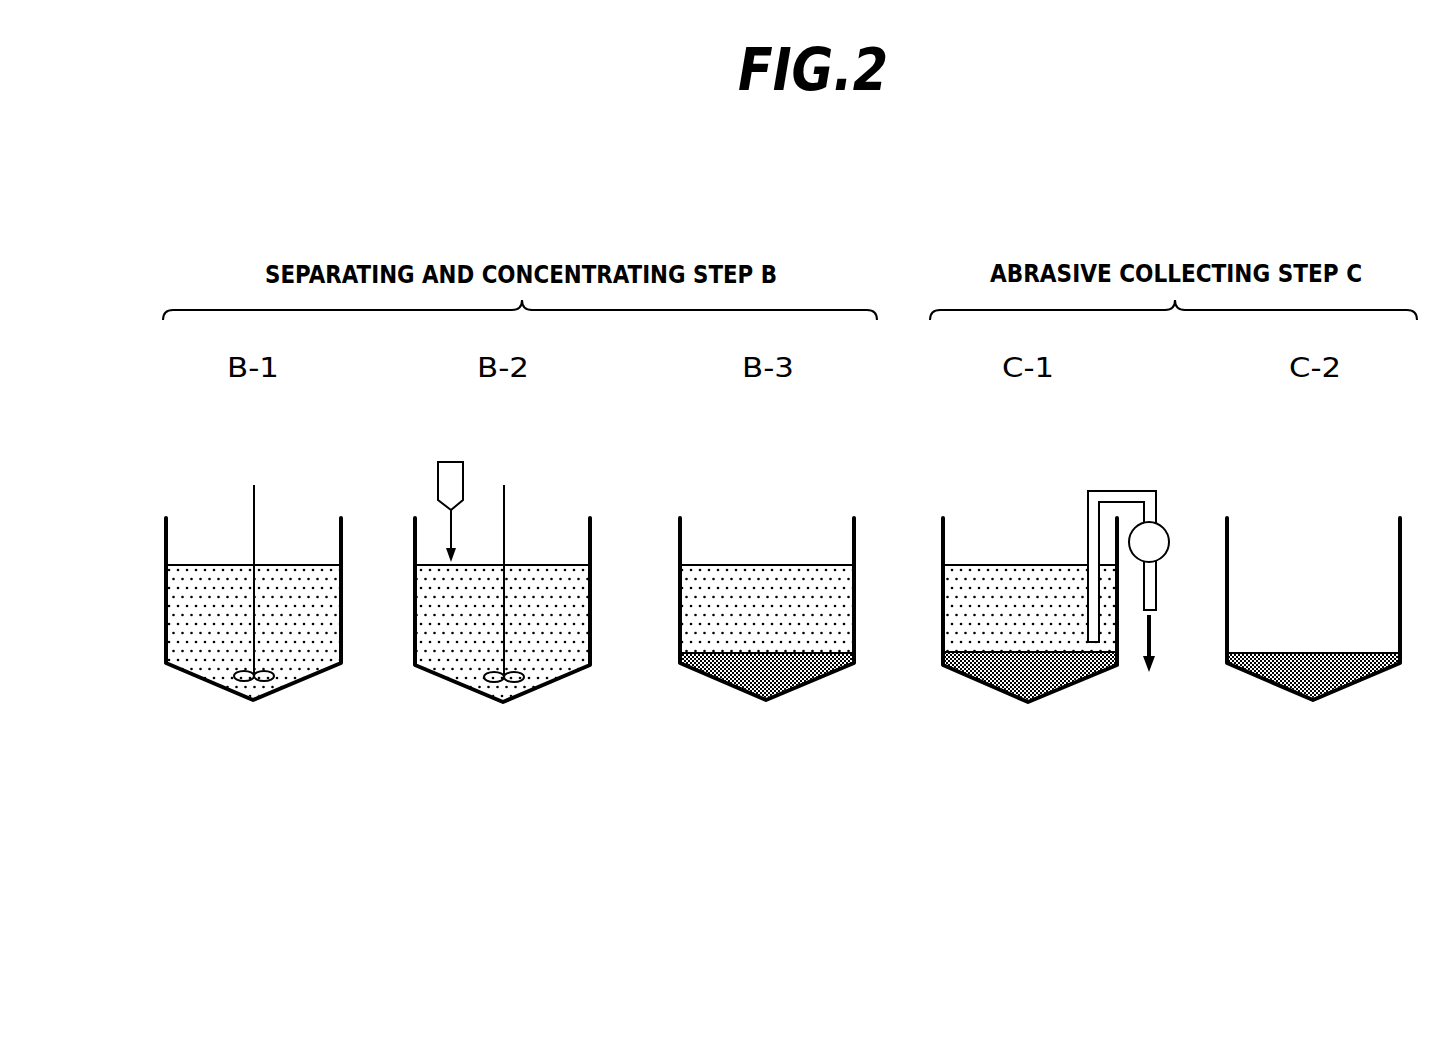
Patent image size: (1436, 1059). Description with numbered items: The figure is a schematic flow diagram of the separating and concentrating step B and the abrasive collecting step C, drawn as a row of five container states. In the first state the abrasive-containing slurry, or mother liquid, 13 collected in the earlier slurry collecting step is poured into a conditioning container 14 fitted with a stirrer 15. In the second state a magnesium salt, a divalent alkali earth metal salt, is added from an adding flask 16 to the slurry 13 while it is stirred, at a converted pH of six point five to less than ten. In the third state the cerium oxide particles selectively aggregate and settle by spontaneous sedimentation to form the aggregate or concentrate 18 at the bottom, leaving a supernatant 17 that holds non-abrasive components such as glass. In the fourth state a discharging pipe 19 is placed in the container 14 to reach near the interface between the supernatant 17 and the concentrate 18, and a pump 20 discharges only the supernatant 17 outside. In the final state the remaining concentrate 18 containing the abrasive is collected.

The abrasive-containing slurry 13 is at (215, 643).
The conditioning container 14 is at (308, 682).
The stirrer 15 is at (256, 498).
The adding flask 16 is at (463, 463).
The supernatant 17 is at (727, 590).
The aggregate (concentrate) 18 is at (737, 682).
The discharging pipe 19 is at (1120, 488).
The pump 20 is at (1158, 525).